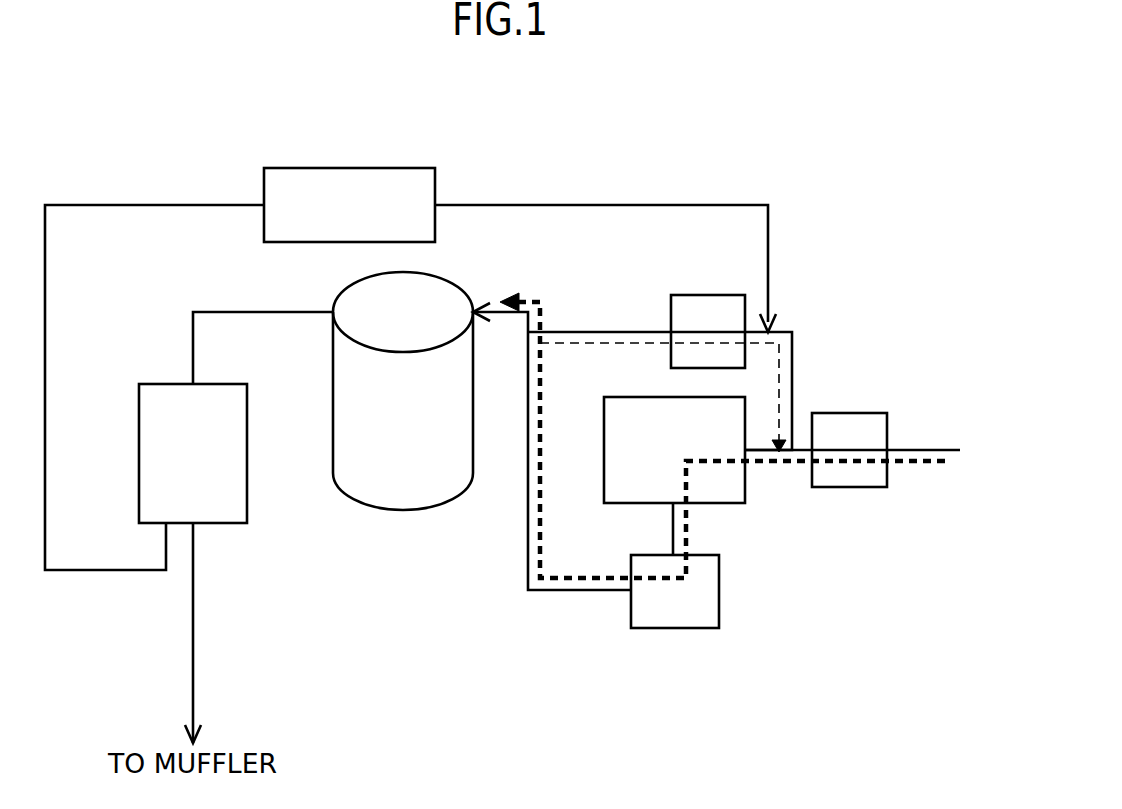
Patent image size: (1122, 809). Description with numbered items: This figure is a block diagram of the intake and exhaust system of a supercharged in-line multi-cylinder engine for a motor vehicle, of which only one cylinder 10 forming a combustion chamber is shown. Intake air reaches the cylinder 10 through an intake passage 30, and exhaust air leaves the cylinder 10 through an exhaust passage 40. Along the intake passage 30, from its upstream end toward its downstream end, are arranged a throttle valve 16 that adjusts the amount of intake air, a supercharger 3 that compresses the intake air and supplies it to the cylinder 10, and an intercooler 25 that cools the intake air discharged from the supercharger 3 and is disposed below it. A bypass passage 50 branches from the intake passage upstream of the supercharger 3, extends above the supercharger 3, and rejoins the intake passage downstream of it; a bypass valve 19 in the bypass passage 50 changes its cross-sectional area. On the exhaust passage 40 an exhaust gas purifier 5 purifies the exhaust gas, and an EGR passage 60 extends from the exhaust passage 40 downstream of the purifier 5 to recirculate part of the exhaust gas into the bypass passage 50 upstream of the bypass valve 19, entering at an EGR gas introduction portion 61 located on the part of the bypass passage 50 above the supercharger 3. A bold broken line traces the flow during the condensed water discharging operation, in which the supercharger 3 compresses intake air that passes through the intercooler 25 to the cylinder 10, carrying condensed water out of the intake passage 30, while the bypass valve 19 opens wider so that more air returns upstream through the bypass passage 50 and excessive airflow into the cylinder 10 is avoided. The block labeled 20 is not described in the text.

The supercharger 3 is at (622, 503).
The exhaust gas purifier 5 is at (247, 485).
The cylinder 10 is at (400, 510).
The throttle valve 16 is at (857, 413).
The bypass valve 19 is at (700, 295).
The pump 20 is at (377, 168).
The intercooler 25 is at (719, 592).
The intake passage 30 is at (553, 596).
The exhaust passage 40 is at (240, 312).
The bypass passage 50 is at (792, 355).
The EGR passage 60 is at (507, 205).
The EGR gas introduction portion 61 is at (775, 326).